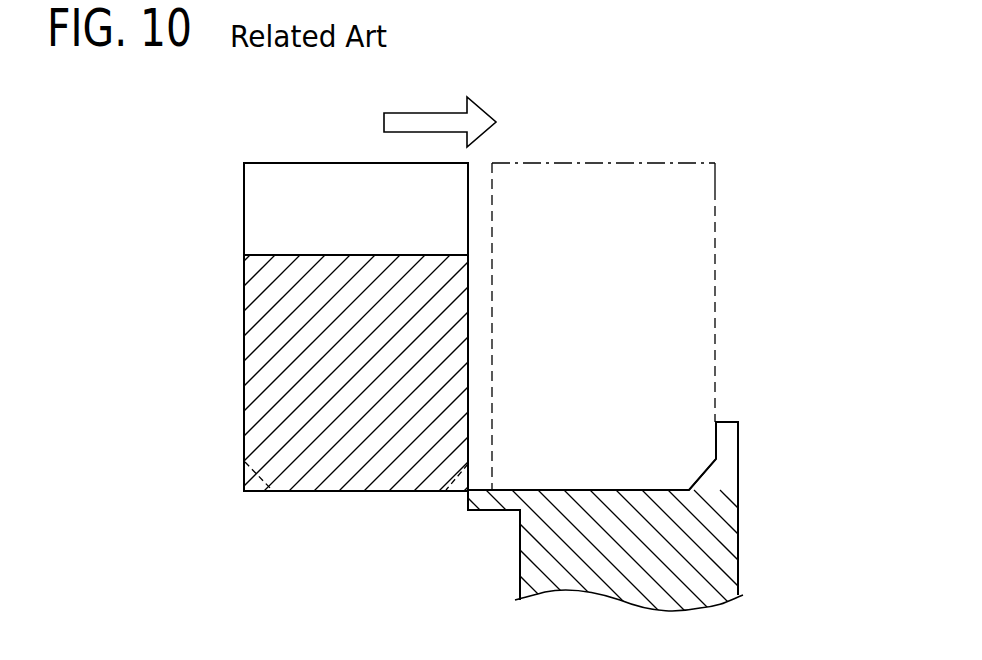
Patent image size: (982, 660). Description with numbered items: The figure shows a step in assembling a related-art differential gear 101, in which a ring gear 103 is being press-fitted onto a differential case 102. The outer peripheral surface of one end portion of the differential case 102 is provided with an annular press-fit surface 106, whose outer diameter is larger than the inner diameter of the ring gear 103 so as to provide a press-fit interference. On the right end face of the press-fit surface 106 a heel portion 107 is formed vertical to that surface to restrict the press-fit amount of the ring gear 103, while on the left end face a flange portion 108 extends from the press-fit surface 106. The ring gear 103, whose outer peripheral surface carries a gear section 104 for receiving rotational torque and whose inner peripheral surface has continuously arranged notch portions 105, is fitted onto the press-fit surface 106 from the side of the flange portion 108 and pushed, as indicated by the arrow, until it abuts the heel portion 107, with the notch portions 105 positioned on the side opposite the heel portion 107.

The differential gear 101 is at (763, 124).
The differential case 102 is at (740, 520).
The ring gear 103 is at (243, 397).
The gear section 104 is at (260, 211).
The notch portions 105 is at (246, 488).
The press-fit surface 106 is at (627, 490).
The heel portion 107 is at (738, 440).
The flange portion 108 is at (486, 511).